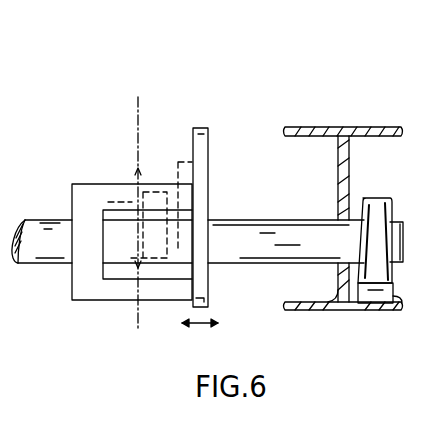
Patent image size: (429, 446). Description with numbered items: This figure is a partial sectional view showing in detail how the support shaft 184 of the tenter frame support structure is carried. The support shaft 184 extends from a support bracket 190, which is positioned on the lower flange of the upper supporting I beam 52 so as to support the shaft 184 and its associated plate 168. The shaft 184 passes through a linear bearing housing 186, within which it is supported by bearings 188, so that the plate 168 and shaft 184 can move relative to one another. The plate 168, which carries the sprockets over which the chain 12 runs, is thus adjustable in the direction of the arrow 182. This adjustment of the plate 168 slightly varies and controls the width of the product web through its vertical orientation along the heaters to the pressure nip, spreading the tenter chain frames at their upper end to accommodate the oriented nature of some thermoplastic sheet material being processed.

The chain 12 is at (139, 113).
The I beam 52 is at (345, 128).
The plate 168 is at (200, 155).
The arrow 182 is at (204, 324).
The support shaft 184 is at (50, 247).
The linear bearing housing 186 is at (90, 195).
The bearings 188 is at (120, 272).
The support bracket 190 is at (380, 257).